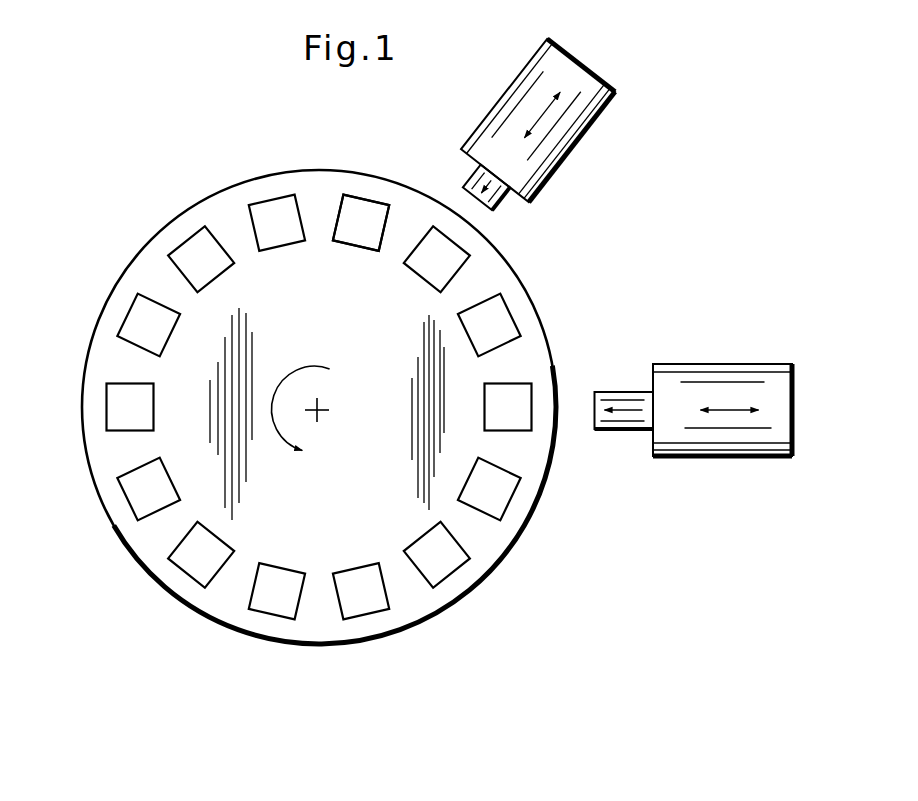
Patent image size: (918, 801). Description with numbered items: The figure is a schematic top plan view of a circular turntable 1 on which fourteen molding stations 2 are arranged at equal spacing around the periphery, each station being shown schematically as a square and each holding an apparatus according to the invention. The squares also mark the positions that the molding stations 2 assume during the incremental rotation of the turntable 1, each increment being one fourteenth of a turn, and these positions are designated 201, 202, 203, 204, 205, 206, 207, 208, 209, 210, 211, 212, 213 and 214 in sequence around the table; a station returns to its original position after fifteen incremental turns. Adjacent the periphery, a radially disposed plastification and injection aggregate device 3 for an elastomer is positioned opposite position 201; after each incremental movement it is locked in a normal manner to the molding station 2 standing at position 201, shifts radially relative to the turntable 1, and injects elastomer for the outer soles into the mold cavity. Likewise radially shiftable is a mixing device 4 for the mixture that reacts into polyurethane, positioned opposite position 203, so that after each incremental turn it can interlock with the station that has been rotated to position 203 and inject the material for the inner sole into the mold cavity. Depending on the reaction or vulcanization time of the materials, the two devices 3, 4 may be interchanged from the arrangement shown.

The circular turntable 1 is at (312, 183).
The molding station 2 is at (376, 206).
The plastification and injection aggregate device 3 is at (715, 433).
The mixing device 4 is at (565, 120).
The molding station position 201 is at (517, 398).
The molding station position 202 is at (497, 317).
The molding station position 203 is at (426, 238).
The molding station position 204 is at (347, 205).
The molding station position 205 is at (268, 212).
The molding station position 206 is at (195, 235).
The molding station position 207 is at (143, 310).
The molding station position 208 is at (113, 398).
The molding station position 209 is at (138, 490).
The molding station position 210 is at (192, 567).
The molding station position 211 is at (282, 608).
The molding station position 212 is at (372, 598).
The molding station position 213 is at (448, 553).
The molding station position 214 is at (498, 490).